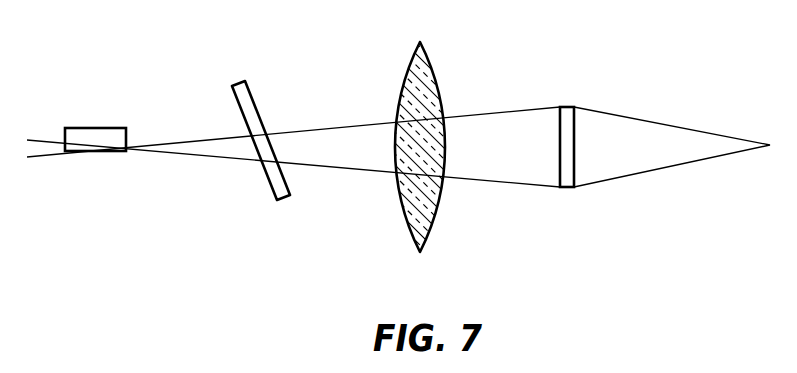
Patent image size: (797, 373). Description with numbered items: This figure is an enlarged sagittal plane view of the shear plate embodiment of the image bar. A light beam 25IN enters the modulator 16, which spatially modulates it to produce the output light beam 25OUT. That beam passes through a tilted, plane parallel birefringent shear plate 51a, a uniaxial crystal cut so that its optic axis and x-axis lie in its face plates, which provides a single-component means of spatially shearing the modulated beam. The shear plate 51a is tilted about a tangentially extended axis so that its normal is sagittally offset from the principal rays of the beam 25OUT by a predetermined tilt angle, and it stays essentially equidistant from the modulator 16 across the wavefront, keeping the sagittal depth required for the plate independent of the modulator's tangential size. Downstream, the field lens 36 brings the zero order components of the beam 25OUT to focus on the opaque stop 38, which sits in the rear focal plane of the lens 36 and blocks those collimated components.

The input light beam 25IN is at (37, 147).
The spatially modulated light beam 25OUT is at (200, 153).
The modulator 16 is at (105, 127).
The tilted, plane parallel birefringent shear plate 51a is at (260, 117).
The field lens 36 is at (402, 88).
The opaque stop 38 is at (563, 105).